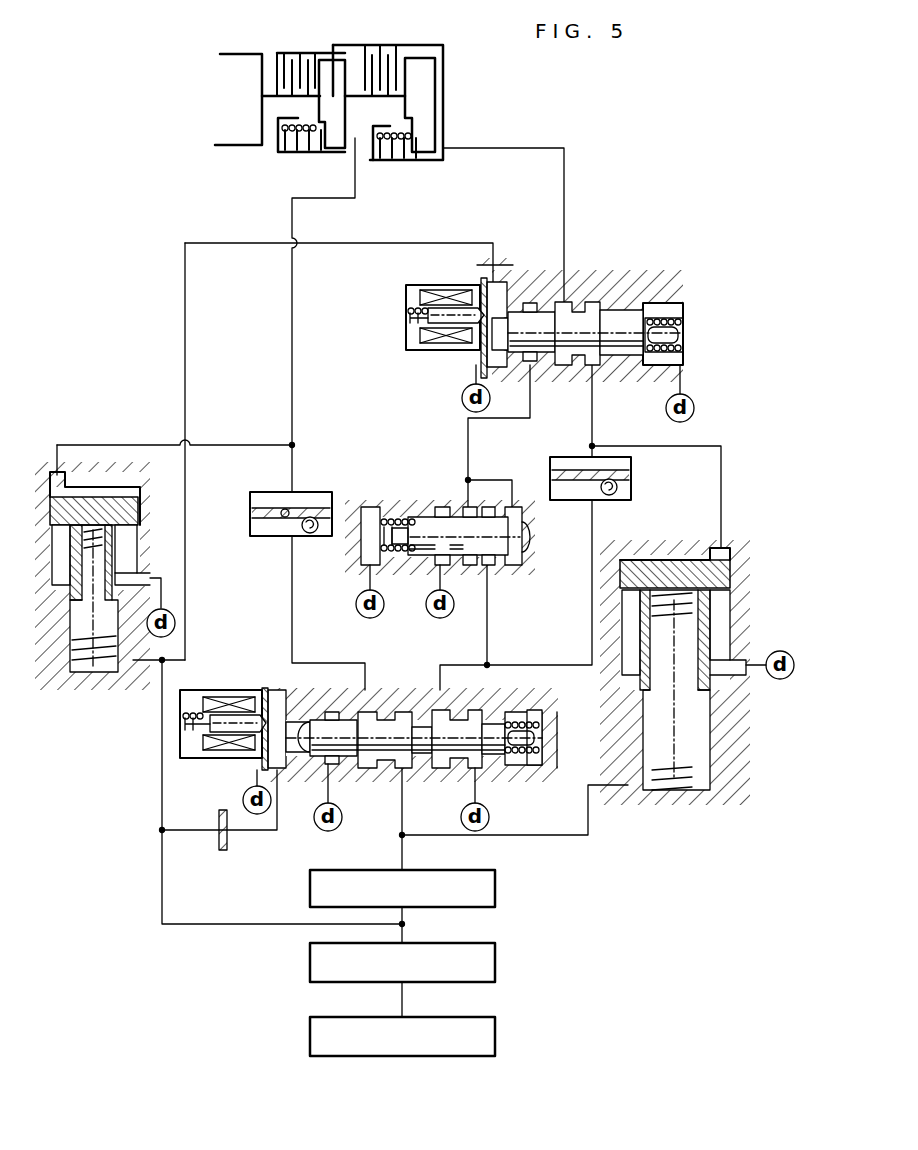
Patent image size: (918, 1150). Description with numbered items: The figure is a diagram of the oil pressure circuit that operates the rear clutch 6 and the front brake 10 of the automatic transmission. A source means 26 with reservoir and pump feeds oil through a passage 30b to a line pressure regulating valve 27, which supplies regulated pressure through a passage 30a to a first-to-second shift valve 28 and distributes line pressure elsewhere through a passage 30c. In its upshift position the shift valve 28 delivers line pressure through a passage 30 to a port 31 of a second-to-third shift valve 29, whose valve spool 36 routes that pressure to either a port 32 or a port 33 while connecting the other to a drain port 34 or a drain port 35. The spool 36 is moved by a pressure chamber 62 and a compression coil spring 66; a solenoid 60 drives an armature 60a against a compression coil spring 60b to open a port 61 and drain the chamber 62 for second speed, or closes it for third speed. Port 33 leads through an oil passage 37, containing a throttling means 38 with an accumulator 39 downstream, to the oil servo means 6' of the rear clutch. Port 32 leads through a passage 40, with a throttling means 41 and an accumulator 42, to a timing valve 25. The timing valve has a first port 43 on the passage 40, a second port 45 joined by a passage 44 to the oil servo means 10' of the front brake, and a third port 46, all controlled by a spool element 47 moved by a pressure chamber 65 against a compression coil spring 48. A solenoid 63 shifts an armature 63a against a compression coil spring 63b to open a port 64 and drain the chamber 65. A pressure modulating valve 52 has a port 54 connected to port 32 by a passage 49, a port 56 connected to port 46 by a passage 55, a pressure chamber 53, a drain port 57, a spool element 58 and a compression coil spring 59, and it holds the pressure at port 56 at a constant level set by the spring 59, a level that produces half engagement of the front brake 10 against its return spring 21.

The rear clutch 6 is at (280, 81).
The oil servo means of the rear clutch 6' is at (324, 106).
The front brake 10 is at (388, 83).
The oil servo means of the front brake 10' is at (447, 105).
The return spring 21 is at (391, 157).
The timing valve 25 is at (608, 340).
The source means of oil pressure 26 is at (497, 1042).
The line pressure regulating valve 27 is at (497, 967).
The 1-2 shift valve 28 is at (497, 885).
The 2-3 shift valve 29 is at (546, 725).
The passage 30 is at (404, 856).
The passage 30a is at (406, 928).
The passage 30b is at (404, 1002).
The passage 30c is at (187, 930).
The port 31 is at (430, 744).
The port 32 is at (442, 710).
The port 33 is at (364, 712).
The drain port 34 is at (478, 710).
The drain port 35 is at (332, 712).
The valve spool 36 is at (360, 766).
The oil passage 37 is at (293, 341).
The throttling means 38 is at (295, 492).
The accumulator 39 is at (130, 482).
The passage 40 is at (594, 413).
The throttling means 41 is at (622, 500).
The accumulator 42 is at (748, 608).
The first port 43 is at (608, 310).
The passage 44 is at (566, 180).
The second port 45 is at (568, 302).
The third port 46 is at (533, 303).
The spool element 47 is at (646, 316).
The compression coil spring 48 is at (686, 350).
The passage 49 is at (489, 634).
The pressure modulating valve 52 is at (457, 539).
The pressure chamber 53 is at (523, 557).
The port 54 is at (489, 568).
The passage 55 is at (487, 426).
The port 56 is at (466, 494).
The drain port 57 is at (434, 570).
The spool element 58 is at (523, 526).
The compression coil spring 59 is at (335, 535).
The solenoid 60 is at (190, 728).
The armature 60a is at (230, 734).
The compression coil spring 60b is at (197, 748).
The port 61 is at (276, 690).
The pressure chamber 62 is at (288, 752).
The solenoid 63 is at (413, 313).
The armature 63a is at (436, 308).
The compression coil spring 63b is at (408, 300).
The port 64 is at (478, 370).
The pressure chamber 65 is at (494, 386).
The compression coil spring 66 is at (517, 752).